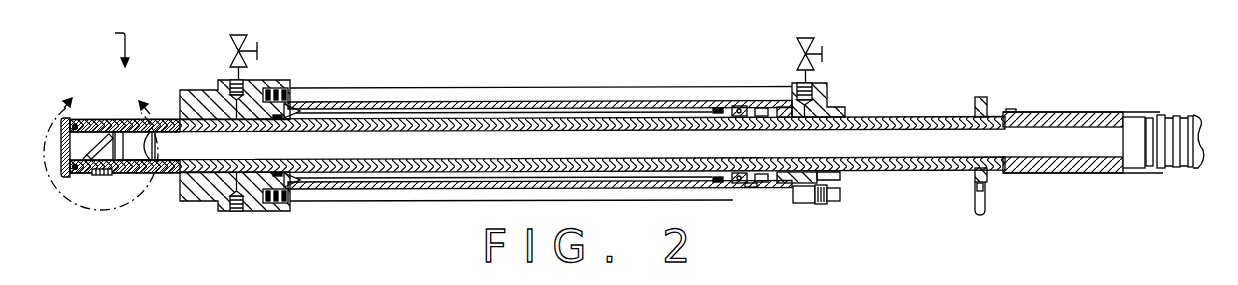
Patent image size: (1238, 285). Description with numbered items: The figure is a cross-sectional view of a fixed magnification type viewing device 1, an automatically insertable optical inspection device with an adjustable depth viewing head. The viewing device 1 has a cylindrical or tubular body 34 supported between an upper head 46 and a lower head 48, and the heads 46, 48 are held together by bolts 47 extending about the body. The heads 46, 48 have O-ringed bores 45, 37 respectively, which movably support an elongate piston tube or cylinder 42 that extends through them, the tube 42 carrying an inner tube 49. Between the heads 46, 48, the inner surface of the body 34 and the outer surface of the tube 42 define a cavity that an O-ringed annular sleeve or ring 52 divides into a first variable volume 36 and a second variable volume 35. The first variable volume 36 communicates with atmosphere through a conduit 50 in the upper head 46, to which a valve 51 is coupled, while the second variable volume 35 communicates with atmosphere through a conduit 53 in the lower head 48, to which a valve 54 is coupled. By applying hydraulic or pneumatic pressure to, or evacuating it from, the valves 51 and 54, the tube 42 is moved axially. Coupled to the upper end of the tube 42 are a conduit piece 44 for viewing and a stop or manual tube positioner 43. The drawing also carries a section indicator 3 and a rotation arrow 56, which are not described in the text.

The viewing device 1 is at (1006, 70).
The section view indicator 3 is at (101, 146).
The tubular body 34 is at (515, 102).
The second variable volume 35 is at (397, 117).
The first variable volume 36 is at (757, 101).
The O-ringed bore 37 is at (273, 87).
The piston tube 42 is at (907, 114).
The manual tube positioner 43 is at (982, 197).
The conduit piece 44 is at (1160, 114).
The O-ringed bore 45 is at (832, 95).
The upper head 46 is at (840, 173).
The bolts 47 is at (310, 193).
The lower head 48 is at (200, 203).
The inner tube 49 is at (873, 114).
The conduit 50 is at (797, 83).
The valve 51 is at (805, 37).
The O-ringed annular sleeve 52 is at (752, 173).
The conduit 53 is at (231, 81).
The valve 54 is at (239, 33).
The rotation arrow 56 is at (103, 47).